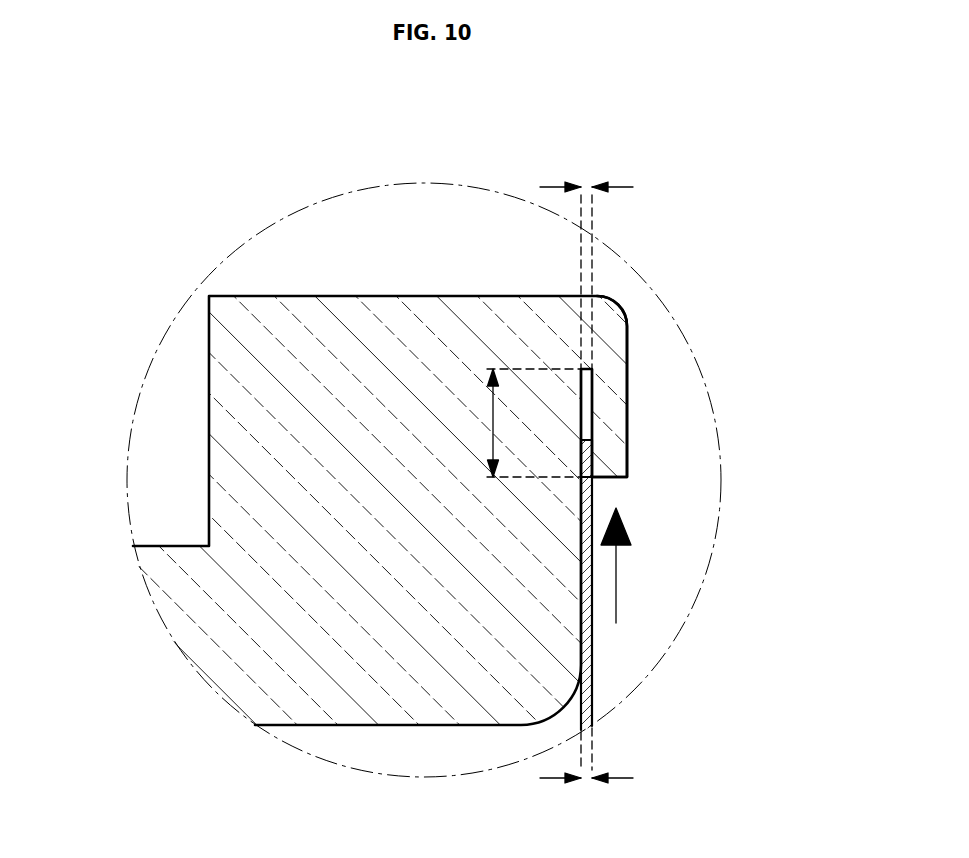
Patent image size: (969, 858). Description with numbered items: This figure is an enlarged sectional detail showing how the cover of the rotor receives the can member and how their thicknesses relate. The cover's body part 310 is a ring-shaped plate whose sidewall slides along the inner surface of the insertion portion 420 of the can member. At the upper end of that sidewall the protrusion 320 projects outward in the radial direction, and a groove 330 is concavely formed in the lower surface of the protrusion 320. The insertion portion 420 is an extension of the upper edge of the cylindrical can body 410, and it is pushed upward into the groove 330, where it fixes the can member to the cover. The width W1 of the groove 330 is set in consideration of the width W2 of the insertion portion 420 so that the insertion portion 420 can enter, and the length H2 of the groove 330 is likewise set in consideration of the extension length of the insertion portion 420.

The body part 310 is at (362, 370).
The protrusion 320 is at (607, 366).
The groove 330 is at (597, 416).
The can body 410 is at (592, 658).
The insertion portion 420 is at (594, 453).
The length of the groove H2 is at (493, 415).
The width of the groove W1 is at (586, 252).
The width of the insertion portion W2 is at (586, 778).